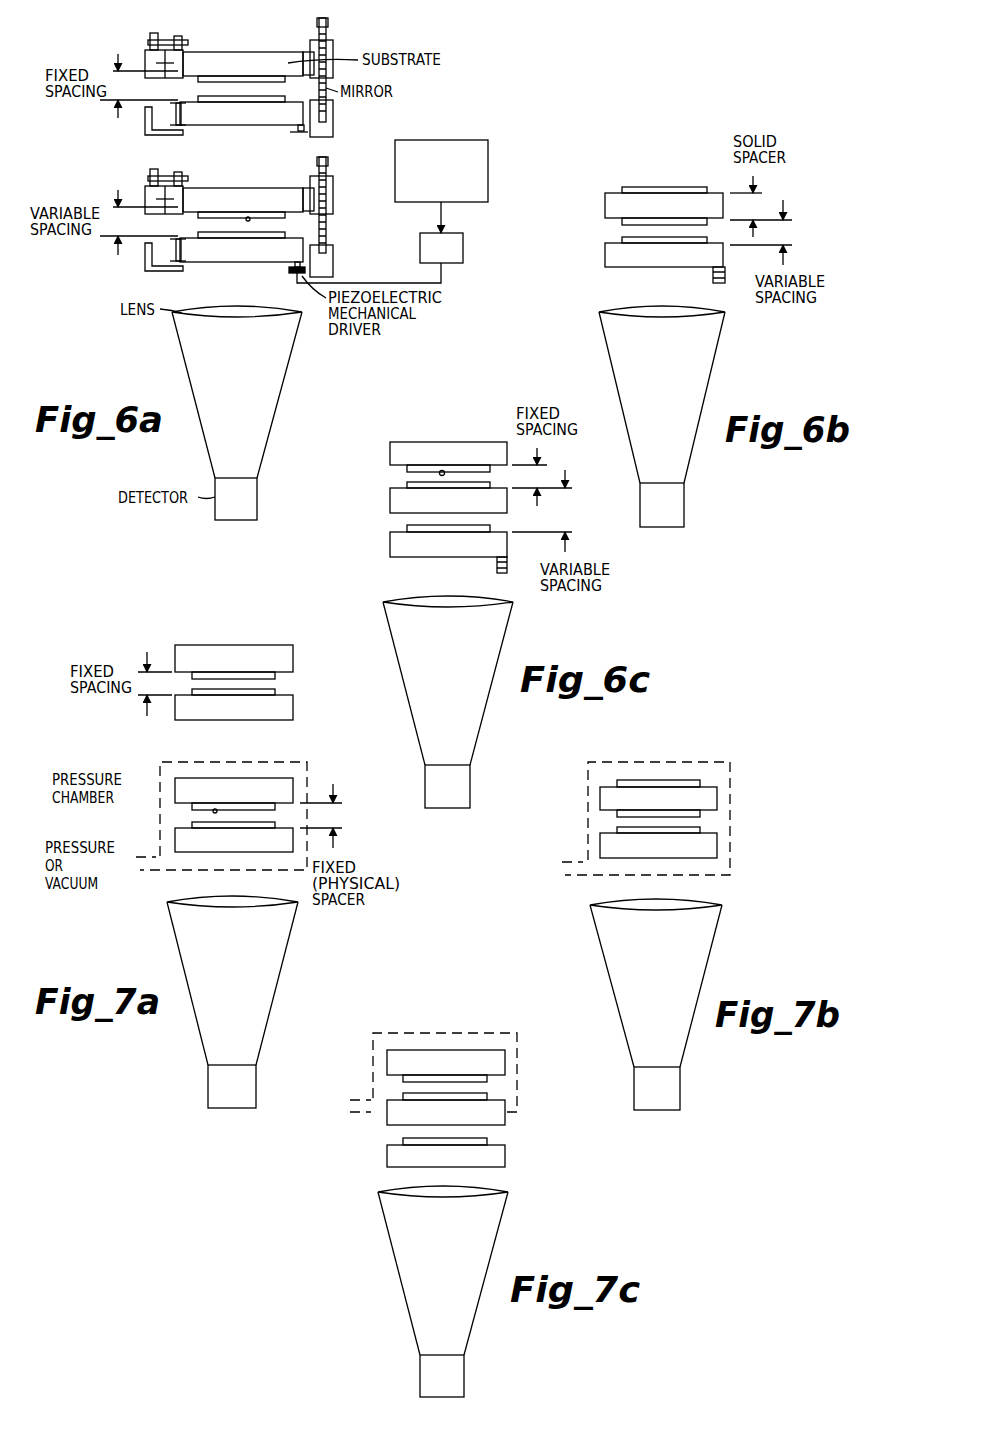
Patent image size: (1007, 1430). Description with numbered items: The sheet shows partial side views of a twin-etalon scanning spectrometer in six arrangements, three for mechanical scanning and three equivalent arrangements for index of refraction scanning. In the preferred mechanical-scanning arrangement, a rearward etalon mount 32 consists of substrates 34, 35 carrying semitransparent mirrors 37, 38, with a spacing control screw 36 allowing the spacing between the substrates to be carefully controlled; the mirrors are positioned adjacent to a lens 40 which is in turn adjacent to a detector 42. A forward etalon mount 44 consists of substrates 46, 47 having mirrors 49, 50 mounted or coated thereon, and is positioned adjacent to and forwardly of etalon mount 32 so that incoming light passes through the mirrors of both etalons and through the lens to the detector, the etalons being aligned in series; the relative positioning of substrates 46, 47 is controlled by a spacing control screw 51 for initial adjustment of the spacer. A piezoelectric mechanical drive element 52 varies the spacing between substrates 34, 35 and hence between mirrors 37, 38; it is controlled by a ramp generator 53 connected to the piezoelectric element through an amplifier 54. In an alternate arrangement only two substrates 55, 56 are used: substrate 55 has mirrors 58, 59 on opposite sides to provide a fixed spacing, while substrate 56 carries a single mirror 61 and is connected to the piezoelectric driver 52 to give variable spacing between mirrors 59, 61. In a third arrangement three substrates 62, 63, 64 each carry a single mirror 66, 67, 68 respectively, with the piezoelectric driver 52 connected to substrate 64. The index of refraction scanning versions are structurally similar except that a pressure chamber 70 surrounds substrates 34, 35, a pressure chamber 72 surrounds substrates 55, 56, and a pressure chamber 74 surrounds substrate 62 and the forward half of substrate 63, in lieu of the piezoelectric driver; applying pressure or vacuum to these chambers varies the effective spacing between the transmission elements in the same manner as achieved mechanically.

In FIG. 6A, the etalon mount 32 is at (338, 186).
In FIG. 6A, the substrate 34 is at (226, 188).
In FIG. 7A, the substrate 34 is at (182, 794).
In FIG. 6A, the substrate 35 is at (205, 262).
In FIG. 7A, the substrate 35 is at (182, 843).
In FIG. 6A, the spacing control screw 36 is at (327, 226).
In FIG. 6A, the mirror 37 is at (248, 212).
In FIG. 7A, the mirror 37 is at (215, 803).
In FIG. 6A, the mirror 38 is at (285, 235).
In FIG. 7A, the mirror 38 is at (215, 828).
In FIG. 6A, the lens 40 is at (197, 318).
In FIG. 6B, the lens 40 is at (622, 318).
In FIG. 6C, the lens 40 is at (410, 598).
In FIG. 7A, the lens 40 is at (282, 905).
In FIG. 7B, the lens 40 is at (705, 908).
In FIG. 7C, the lens 40 is at (480, 1195).
In FIG. 6A, the detector 42 is at (257, 493).
In FIG. 6B, the detector 42 is at (684, 505).
In FIG. 6C, the detector 42 is at (466, 792).
In FIG. 7A, the detector 42 is at (250, 1098).
In FIG. 7B, the detector 42 is at (680, 1094).
In FIG. 7C, the detector 42 is at (464, 1382).
In FIG. 6A, the etalon mount 44 is at (342, 47).
In FIG. 6A, the substrate 46 is at (222, 52).
In FIG. 7A, the substrate 46 is at (293, 657).
In FIG. 6A, the substrate 47 is at (205, 125).
In FIG. 7A, the substrate 47 is at (293, 715).
In FIG. 6A, the mirror 49 is at (235, 76).
In FIG. 7A, the mirror 49 is at (275, 676).
In FIG. 6A, the mirror 50 is at (233, 102).
In FIG. 7A, the mirror 50 is at (275, 692).
In FIG. 6A, the spacing control screw 51 is at (326, 108).
In FIG. 6A, the piezoelectric mechanical drive element 52 is at (289, 270).
In FIG. 6B, the piezoelectric mechanical drive element 52 is at (720, 283).
In FIG. 6C, the piezoelectric mechanical drive element 52 is at (503, 573).
In FIG. 6A, the ramp generator 53 is at (440, 140).
In FIG. 6A, the amplifier 54 is at (462, 263).
In FIG. 6B, the substrate 55 is at (606, 210).
In FIG. 7B, the substrate 55 is at (606, 798).
In FIG. 6B, the substrate 56 is at (606, 258).
In FIG. 7B, the substrate 56 is at (606, 846).
In FIG. 6B, the mirror 58 is at (660, 187).
In FIG. 7B, the mirror 58 is at (650, 780).
In FIG. 6B, the mirror 59 is at (630, 224).
In FIG. 7B, the mirror 59 is at (700, 813).
In FIG. 6B, the mirror 61 is at (660, 238).
In FIG. 7B, the mirror 61 is at (700, 830).
In FIG. 6C, the substrate 62 is at (392, 450).
In FIG. 7C, the substrate 62 is at (505, 1062).
In FIG. 6C, the substrate 63 is at (392, 500).
In FIG. 7C, the substrate 63 is at (505, 1118).
In FIG. 6C, the substrate 64 is at (392, 545).
In FIG. 7C, the substrate 64 is at (505, 1153).
In FIG. 6C, the mirror 66 is at (444, 466).
In FIG. 7C, the mirror 66 is at (405, 1080).
In FIG. 6C, the mirror 67 is at (412, 484).
In FIG. 7C, the mirror 67 is at (487, 1096).
In FIG. 6C, the mirror 68 is at (441, 527).
In FIG. 7C, the mirror 68 is at (403, 1141).
In FIG. 7A, the pressure chamber 70 is at (307, 778).
In FIG. 7B, the pressure chamber 72 is at (730, 786).
In FIG. 7C, the pressure chamber 74 is at (480, 1033).